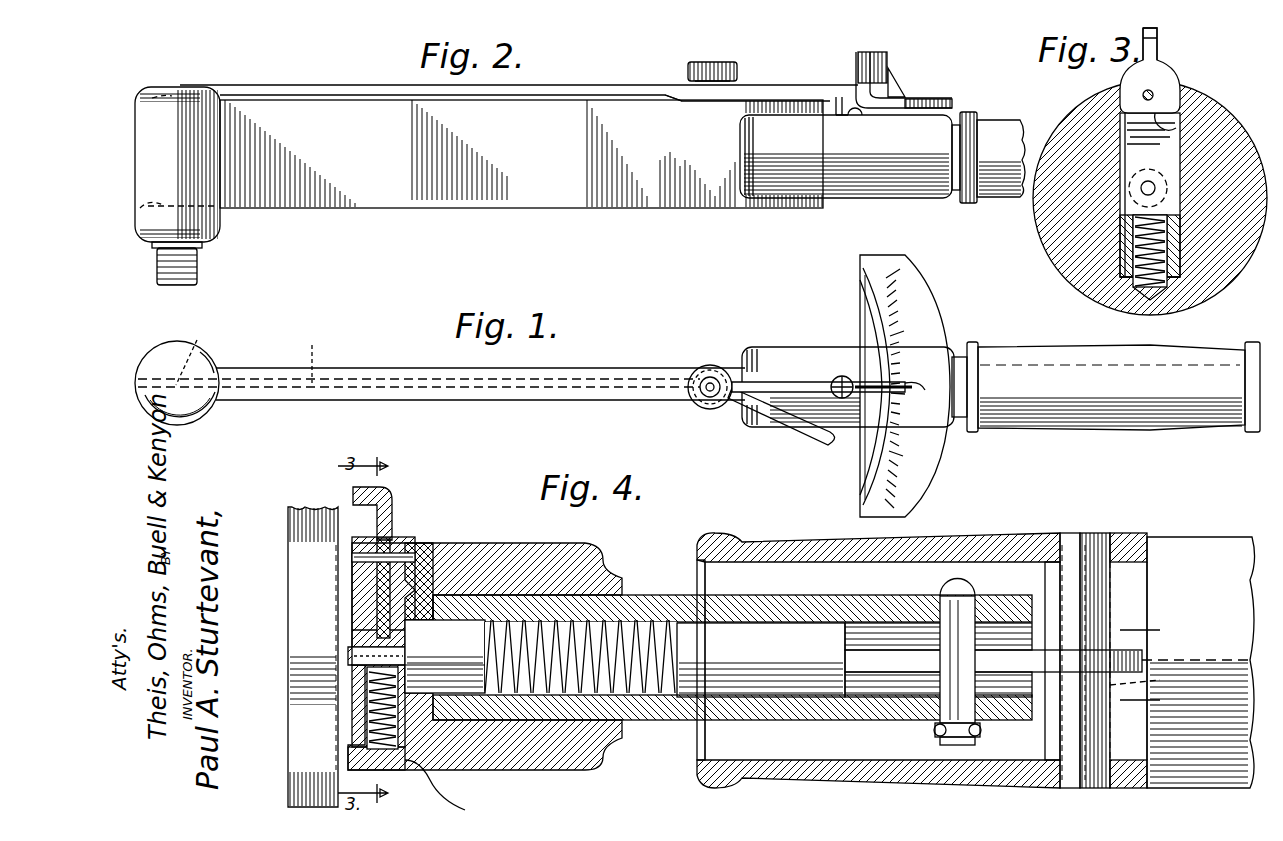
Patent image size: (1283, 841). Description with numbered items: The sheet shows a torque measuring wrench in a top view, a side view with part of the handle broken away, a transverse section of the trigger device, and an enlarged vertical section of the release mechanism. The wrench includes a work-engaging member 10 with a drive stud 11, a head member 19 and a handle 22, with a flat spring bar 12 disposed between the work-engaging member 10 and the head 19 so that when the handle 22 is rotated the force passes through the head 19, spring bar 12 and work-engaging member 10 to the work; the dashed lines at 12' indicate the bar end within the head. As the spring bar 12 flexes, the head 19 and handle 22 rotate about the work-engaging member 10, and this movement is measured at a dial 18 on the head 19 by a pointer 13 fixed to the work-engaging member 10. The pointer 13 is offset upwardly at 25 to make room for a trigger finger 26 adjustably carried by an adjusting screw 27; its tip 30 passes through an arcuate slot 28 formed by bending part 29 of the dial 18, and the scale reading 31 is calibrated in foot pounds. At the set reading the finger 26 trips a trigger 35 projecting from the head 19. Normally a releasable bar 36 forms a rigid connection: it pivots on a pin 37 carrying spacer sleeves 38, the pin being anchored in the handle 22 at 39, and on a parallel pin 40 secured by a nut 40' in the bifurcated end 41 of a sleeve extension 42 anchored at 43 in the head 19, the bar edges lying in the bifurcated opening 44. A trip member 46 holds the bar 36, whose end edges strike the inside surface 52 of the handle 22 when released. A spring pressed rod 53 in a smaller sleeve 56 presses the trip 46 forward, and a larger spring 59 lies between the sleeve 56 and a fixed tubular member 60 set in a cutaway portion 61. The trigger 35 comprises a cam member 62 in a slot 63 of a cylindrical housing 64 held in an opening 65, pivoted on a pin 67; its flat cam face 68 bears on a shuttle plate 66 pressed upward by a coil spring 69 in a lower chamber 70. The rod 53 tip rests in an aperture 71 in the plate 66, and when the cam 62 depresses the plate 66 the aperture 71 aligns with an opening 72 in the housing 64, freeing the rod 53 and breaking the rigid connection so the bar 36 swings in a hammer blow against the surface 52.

In FIG. 2, the work-engaging member 10 is at (147, 162).
In FIG. 1, the work-engaging member 10 is at (158, 350).
In FIG. 2, the square drive stud 11 is at (192, 267).
In FIG. 2, the flat spring bar 12 is at (521, 154).
In FIG. 1, the flat spring bar 12 is at (419, 356).
In FIG. 4, the flat spring bar 12 is at (311, 638).
In FIG. 2, the end of tubular member 12' is at (156, 153).
In FIG. 1, the end of tubular member 12' is at (203, 352).
In FIG. 2, the pointer 13 is at (566, 94).
In FIG. 1, the pointer 13 is at (385, 368).
In FIG. 2, the dial 18 is at (935, 99).
In FIG. 1, the dial 18 is at (925, 278).
In FIG. 2, the head member 19 is at (922, 184).
In FIG. 3, the head member 19 is at (1222, 268).
In FIG. 1, the head member 19 is at (765, 352).
In FIG. 4, the head member 19 is at (590, 548).
In FIG. 2, the handle 22 is at (1003, 122).
In FIG. 1, the handle 22 is at (1212, 430).
In FIG. 4, the handle 22 is at (1192, 540).
In FIG. 2, the upward offset of pointer 25 is at (672, 95).
In FIG. 2, the trigger finger 26 is at (740, 102).
In FIG. 1, the trigger finger 26 is at (810, 438).
In FIG. 2, the adjusting screw 27 is at (718, 62).
In FIG. 1, the arcuate slot 28 is at (868, 330).
In FIG. 2, the bent dial part 29 is at (884, 58).
In FIG. 1, the bent dial part 29 is at (905, 338).
In FIG. 2, the pointer tip 30 is at (902, 88).
In FIG. 1, the pointer tip 30 is at (925, 390).
In FIG. 1, the scale reading 31 is at (890, 488).
In FIG. 2, the trigger 35 is at (840, 97).
In FIG. 3, the trigger 35 is at (1158, 36).
In FIG. 4, the trigger 35 is at (390, 515).
In FIG. 4, the releasable bar 36 is at (1142, 662).
In FIG. 4, the pin 37 is at (1148, 684).
In FIG. 4, the spacer sleeves 38 is at (1135, 630).
In FIG. 4, the pin anchorage 39 is at (1112, 533).
In FIG. 4, the pin 40 is at (968, 643).
In FIG. 4, the nut 40' is at (930, 737).
In FIG. 4, the bifurcated end 41 is at (1032, 612).
In FIG. 4, the sleeve extension 42 is at (522, 606).
In FIG. 4, the anchorage of sleeve extension 43 is at (482, 594).
In FIG. 4, the bifurcated opening 44 is at (985, 676).
In FIG. 4, the trip member 46 is at (852, 676).
In FIG. 4, the inside surface of handle 52 is at (918, 564).
In FIG. 3, the spring pressed rod 53 is at (1138, 188).
In FIG. 4, the spring pressed rod 53 is at (412, 650).
In FIG. 4, the smaller sleeve 56 is at (782, 640).
In FIG. 4, the spring 59 is at (650, 720).
In FIG. 2, the fixed tubular member 60 is at (856, 115).
In FIG. 1, the fixed tubular member 60 is at (840, 378).
In FIG. 4, the fixed tubular member 60 is at (462, 735).
In FIG. 4, the cutaway portion 61 is at (412, 600).
In FIG. 3, the cam member 62 is at (1160, 72).
In FIG. 3, the slot 63 is at (1185, 100).
In FIG. 4, the slot 63 is at (372, 583).
In FIG. 4, the cylindrical housing 64 is at (352, 608).
In FIG. 3, the opening 65 is at (1165, 280).
In FIG. 4, the opening 65 is at (398, 760).
In FIG. 3, the shuttle plate 66 is at (1122, 208).
In FIG. 4, the shuttle plate 66 is at (352, 630).
In FIG. 3, the pin 67 is at (1153, 92).
In FIG. 4, the pin 67 is at (390, 545).
In FIG. 3, the flat cam face 68 is at (1195, 118).
In FIG. 3, the coil spring 69 is at (1152, 298).
In FIG. 4, the coil spring 69 is at (352, 723).
In FIG. 4, the lower chamber 70 is at (352, 697).
In FIG. 3, the aperture 71 is at (1145, 188).
In FIG. 4, the aperture 71 is at (445, 661).
In FIG. 4, the opening 72 is at (352, 656).